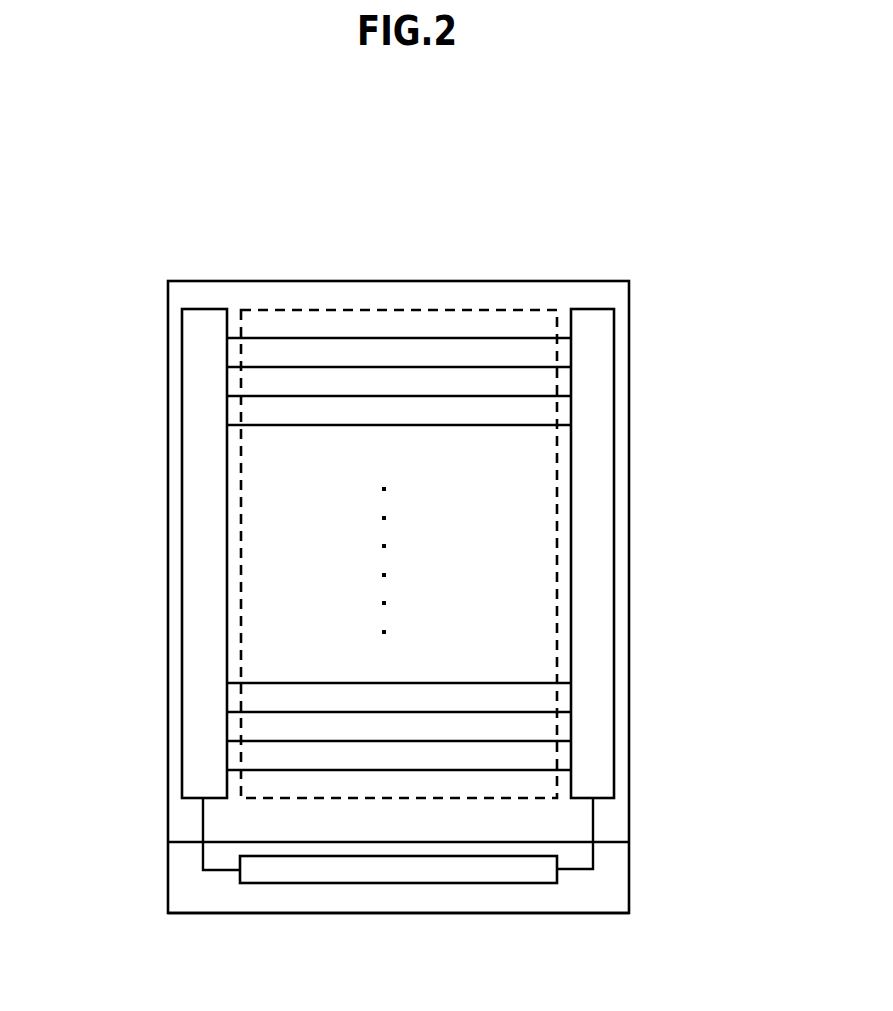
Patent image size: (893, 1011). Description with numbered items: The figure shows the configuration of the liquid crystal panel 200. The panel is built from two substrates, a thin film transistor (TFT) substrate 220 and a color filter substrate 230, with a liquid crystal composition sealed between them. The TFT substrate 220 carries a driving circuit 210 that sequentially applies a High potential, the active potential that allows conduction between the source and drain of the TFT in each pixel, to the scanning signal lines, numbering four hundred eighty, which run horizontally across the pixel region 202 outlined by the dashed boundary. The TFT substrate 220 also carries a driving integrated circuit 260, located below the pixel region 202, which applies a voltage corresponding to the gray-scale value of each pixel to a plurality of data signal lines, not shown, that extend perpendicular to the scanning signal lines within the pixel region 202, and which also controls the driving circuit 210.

The liquid crystal panel 200 is at (402, 194).
The pixel region 202 is at (345, 308).
The driving circuit 210 is at (592, 491).
The color filter substrate 230 is at (613, 811).
The driving integrated circuit 260 is at (330, 875).
The TFT substrate 220 is at (632, 885).